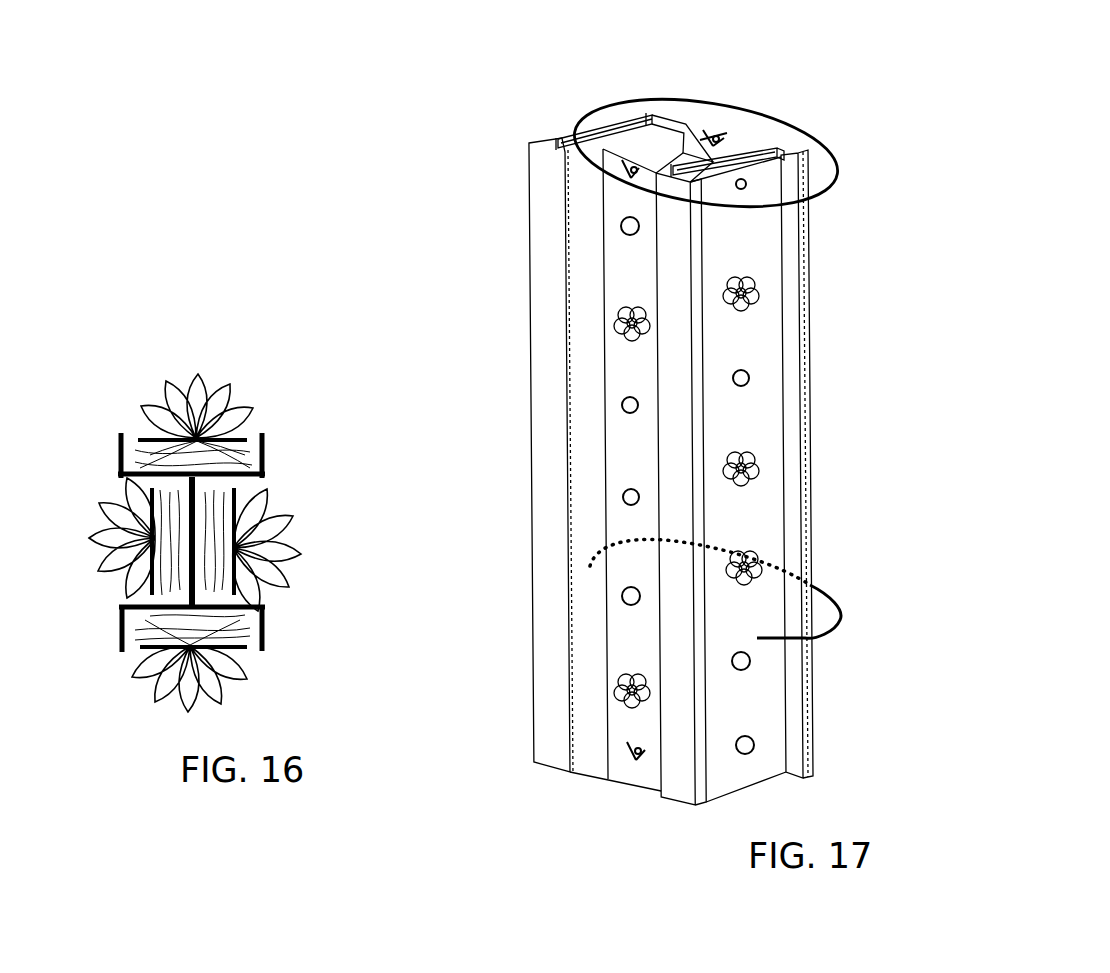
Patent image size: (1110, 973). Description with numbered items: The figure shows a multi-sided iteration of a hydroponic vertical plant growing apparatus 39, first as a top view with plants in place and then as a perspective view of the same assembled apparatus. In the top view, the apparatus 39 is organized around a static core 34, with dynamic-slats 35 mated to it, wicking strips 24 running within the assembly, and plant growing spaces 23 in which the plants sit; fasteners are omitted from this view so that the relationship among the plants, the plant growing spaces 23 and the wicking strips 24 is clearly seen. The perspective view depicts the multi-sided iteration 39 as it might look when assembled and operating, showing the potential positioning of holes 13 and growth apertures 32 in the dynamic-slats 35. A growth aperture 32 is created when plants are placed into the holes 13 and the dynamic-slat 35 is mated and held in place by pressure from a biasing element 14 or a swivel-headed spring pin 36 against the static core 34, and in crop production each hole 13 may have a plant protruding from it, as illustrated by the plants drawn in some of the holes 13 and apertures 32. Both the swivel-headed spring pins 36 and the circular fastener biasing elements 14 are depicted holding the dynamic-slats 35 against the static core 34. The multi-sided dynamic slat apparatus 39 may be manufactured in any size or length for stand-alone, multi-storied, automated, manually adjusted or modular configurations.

In FIG. 17, the holes 13 is at (749, 190).
In FIG. 17, the biasing element 14 is at (840, 165).
In FIG. 16, the plant growing spaces 23 is at (208, 562).
In FIG. 17, the plant growing spaces 23 is at (668, 130).
In FIG. 16, the wicking strips 24 is at (180, 489).
In FIG. 17, the growth apertures 32 is at (618, 240).
In FIG. 16, the static core 34 is at (113, 447).
In FIG. 16, the dynamic-slats 35 is at (236, 432).
In FIG. 17, the dynamic-slats 35 is at (613, 197).
In FIG. 17, the swivel-headed spring pin 36 is at (708, 128).
In FIG. 16, the multi-sided dynamic slat apparatus 39 is at (345, 557).
In FIG. 17, the multi-sided dynamic slat apparatus 39 is at (478, 272).